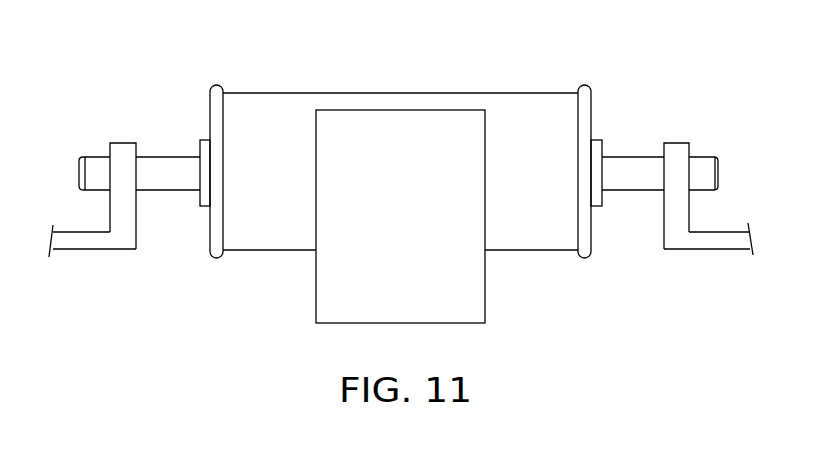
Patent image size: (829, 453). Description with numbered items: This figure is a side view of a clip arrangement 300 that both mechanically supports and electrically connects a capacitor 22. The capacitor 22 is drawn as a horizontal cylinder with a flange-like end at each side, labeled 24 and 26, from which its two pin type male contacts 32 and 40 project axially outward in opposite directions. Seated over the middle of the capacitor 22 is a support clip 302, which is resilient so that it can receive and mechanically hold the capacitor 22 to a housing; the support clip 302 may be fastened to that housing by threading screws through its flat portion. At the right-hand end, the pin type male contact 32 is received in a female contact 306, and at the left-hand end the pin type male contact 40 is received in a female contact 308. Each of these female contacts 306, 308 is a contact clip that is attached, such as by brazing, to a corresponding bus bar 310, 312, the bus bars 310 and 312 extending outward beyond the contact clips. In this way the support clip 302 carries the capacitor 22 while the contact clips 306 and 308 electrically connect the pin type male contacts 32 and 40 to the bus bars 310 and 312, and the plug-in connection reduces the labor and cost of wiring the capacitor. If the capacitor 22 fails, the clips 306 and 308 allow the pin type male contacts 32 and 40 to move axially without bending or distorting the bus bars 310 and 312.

The clip arrangement 300 is at (411, 58).
The capacitor 22 is at (268, 97).
The flange 24 is at (588, 97).
The flange 26 is at (210, 108).
The pin type male contact 40 is at (82, 160).
The pin type male contact 32 is at (703, 153).
The support clip 302 is at (485, 292).
The female contact 306 is at (692, 214).
The female contact 308 is at (113, 208).
The bus bar 310 is at (695, 248).
The bus bar 312 is at (82, 245).